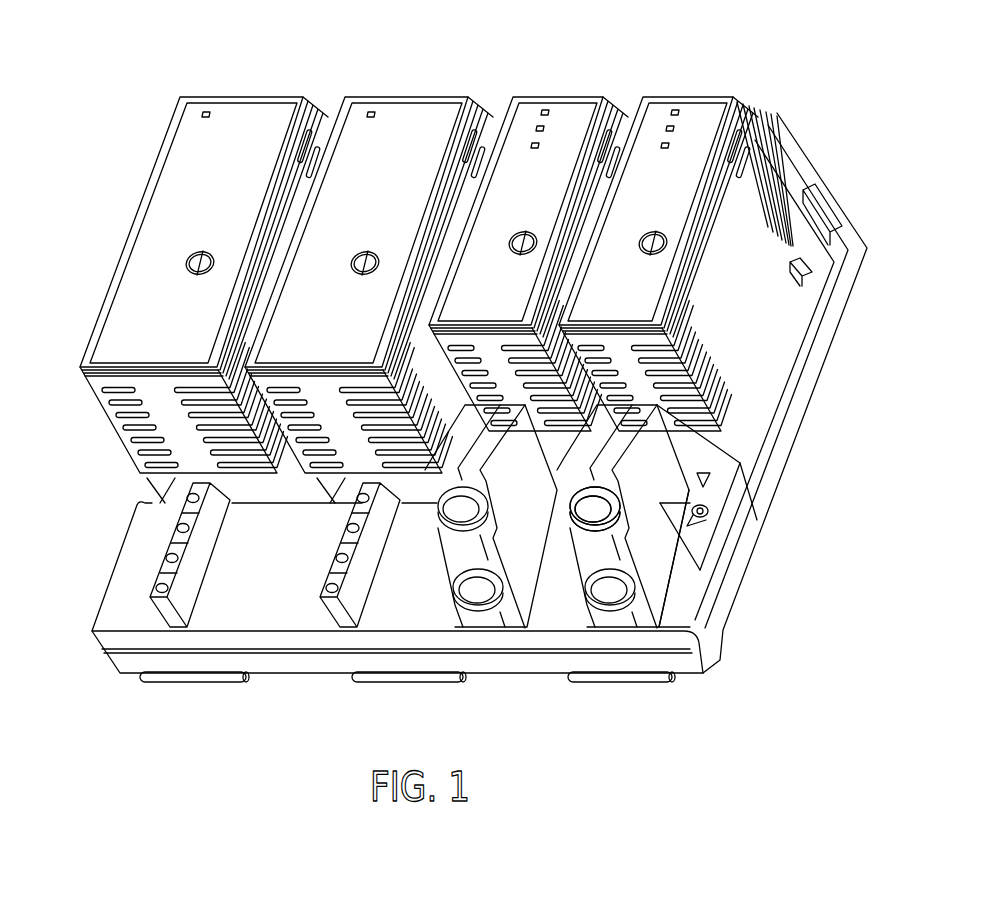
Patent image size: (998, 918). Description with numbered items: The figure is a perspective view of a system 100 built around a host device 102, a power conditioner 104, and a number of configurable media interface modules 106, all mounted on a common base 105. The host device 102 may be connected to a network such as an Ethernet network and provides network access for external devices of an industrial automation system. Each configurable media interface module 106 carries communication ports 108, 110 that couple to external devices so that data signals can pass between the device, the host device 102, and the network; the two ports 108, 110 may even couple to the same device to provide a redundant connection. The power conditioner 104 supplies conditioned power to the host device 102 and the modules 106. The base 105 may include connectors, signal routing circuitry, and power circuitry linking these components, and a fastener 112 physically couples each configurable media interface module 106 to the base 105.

The system 100 is at (503, 384).
The host device 102 is at (694, 98).
The power conditioner 104 is at (127, 237).
The base 105 is at (258, 642).
The configurable media interface module 106 is at (482, 622).
The communication port 108 is at (608, 613).
The communication port 110 is at (618, 506).
The fastener 112 is at (706, 516).